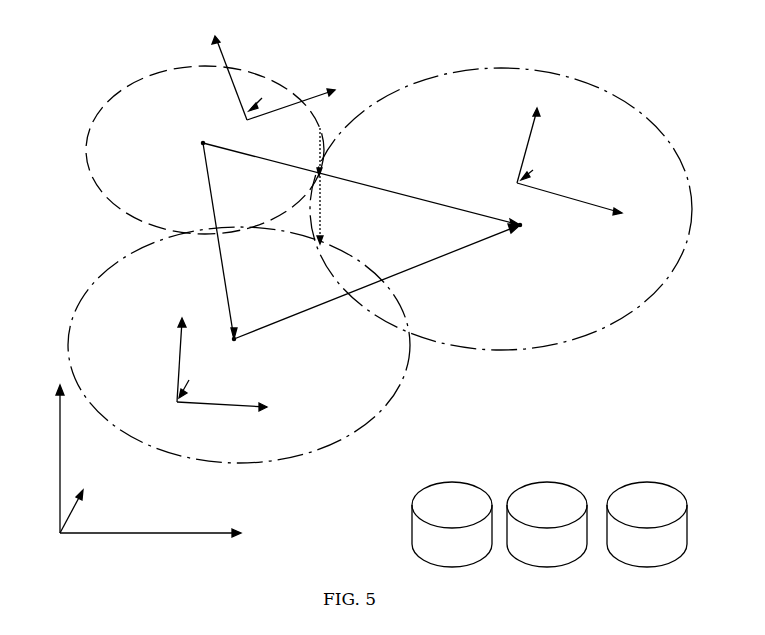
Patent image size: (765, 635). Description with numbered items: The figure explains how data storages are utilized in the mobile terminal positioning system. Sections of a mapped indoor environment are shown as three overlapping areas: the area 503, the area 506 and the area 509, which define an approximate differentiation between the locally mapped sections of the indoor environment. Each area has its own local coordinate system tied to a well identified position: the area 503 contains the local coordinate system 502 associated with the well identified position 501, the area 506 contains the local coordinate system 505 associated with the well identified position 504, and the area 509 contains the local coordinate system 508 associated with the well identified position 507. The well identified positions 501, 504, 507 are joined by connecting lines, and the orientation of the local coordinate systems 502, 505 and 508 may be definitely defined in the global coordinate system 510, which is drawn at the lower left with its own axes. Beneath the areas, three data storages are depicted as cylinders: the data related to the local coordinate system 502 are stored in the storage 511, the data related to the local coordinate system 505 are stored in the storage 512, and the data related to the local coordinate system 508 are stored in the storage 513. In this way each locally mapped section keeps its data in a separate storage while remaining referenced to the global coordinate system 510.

The well identified position 501 is at (203, 143).
The local coordinate system 502 is at (247, 122).
The area 503 is at (140, 82).
The well identified position 504 is at (525, 225).
The local coordinate system 505 is at (517, 183).
The area 506 is at (558, 343).
The well identified position 507 is at (238, 343).
The local coordinate system 508 is at (178, 403).
The area 509 is at (83, 292).
The global coordinate system 510 is at (60, 537).
The storage 511 is at (455, 473).
The storage 512 is at (548, 473).
The storage 513 is at (648, 473).